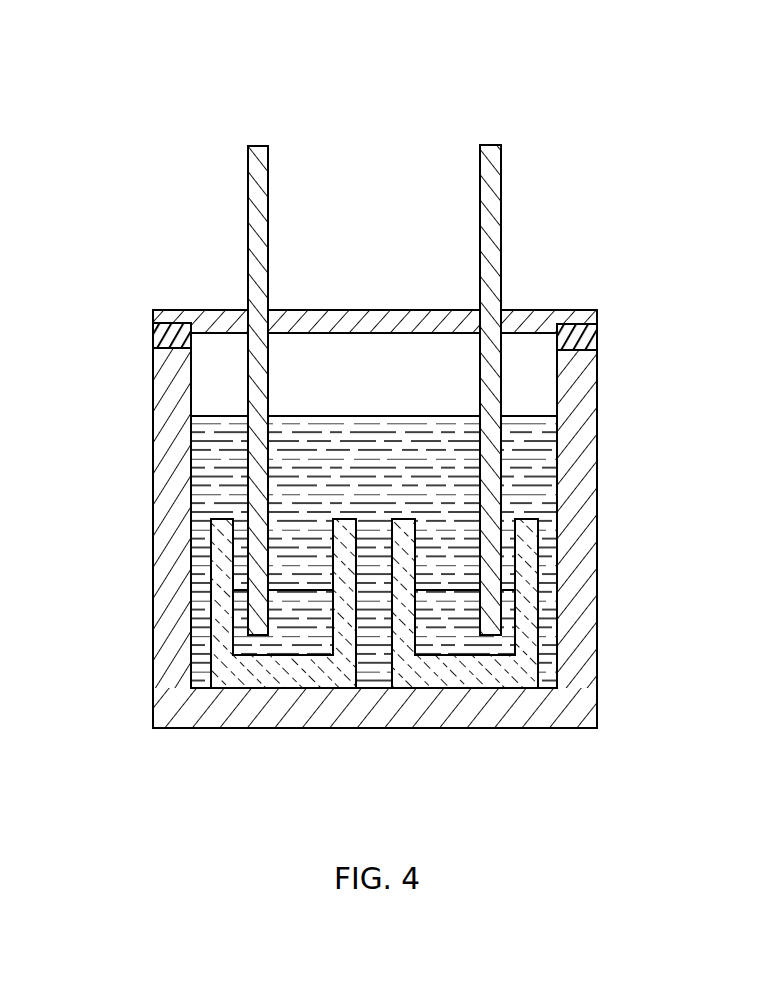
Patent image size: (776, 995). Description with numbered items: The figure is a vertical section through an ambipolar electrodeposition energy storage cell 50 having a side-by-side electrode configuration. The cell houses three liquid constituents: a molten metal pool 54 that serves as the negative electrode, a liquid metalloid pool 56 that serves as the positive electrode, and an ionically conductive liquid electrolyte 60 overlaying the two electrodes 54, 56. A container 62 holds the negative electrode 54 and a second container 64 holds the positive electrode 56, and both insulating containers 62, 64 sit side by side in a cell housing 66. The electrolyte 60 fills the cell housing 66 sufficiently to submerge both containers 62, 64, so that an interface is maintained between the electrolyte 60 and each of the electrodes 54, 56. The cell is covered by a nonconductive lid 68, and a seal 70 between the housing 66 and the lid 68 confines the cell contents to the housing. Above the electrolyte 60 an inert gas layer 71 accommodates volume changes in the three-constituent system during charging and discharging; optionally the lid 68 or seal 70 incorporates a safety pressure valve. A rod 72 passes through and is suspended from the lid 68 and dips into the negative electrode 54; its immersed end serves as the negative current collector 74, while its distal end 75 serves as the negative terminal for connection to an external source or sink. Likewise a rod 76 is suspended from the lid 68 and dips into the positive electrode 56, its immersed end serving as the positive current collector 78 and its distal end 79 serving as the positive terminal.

The energy storage cell 50 is at (206, 101).
The molten metal pool 54 is at (293, 636).
The liquid metalloid pool 56 is at (448, 642).
The liquid electrolyte 60 is at (538, 453).
The container 62 is at (237, 673).
The second container 64 is at (512, 680).
The cell housing 66 is at (597, 578).
The lid 68 is at (210, 310).
The seal 70 is at (593, 340).
The inert gas layer 71 is at (348, 355).
The rod 72 is at (260, 395).
The negative current collector 74 is at (257, 613).
The distal end 75 is at (247, 158).
The rod 76 is at (501, 407).
The positive current collector 78 is at (507, 620).
The distal end 79 is at (502, 162).